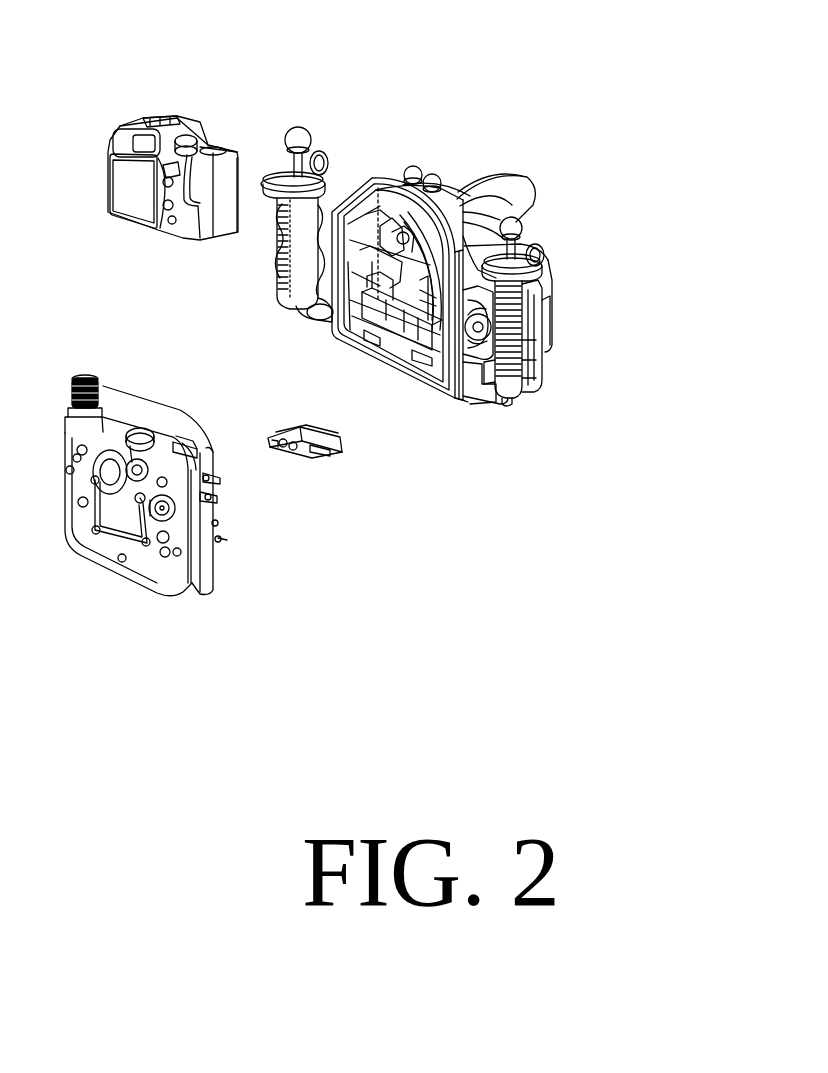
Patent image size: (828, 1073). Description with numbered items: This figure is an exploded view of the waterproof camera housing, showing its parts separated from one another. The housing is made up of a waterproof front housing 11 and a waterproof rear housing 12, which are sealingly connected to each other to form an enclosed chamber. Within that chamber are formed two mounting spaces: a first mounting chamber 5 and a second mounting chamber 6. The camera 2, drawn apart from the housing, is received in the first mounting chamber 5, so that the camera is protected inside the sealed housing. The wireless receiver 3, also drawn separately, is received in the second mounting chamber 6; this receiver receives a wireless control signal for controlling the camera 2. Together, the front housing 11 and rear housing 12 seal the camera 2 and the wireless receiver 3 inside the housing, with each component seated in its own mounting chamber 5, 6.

The camera 2 is at (183, 130).
The wireless receiver 3 is at (337, 457).
The first mounting chamber 5 is at (521, 222).
The second mounting chamber 6 is at (456, 398).
The waterproof front housing 11 is at (193, 550).
The waterproof rear housing 12 is at (440, 209).